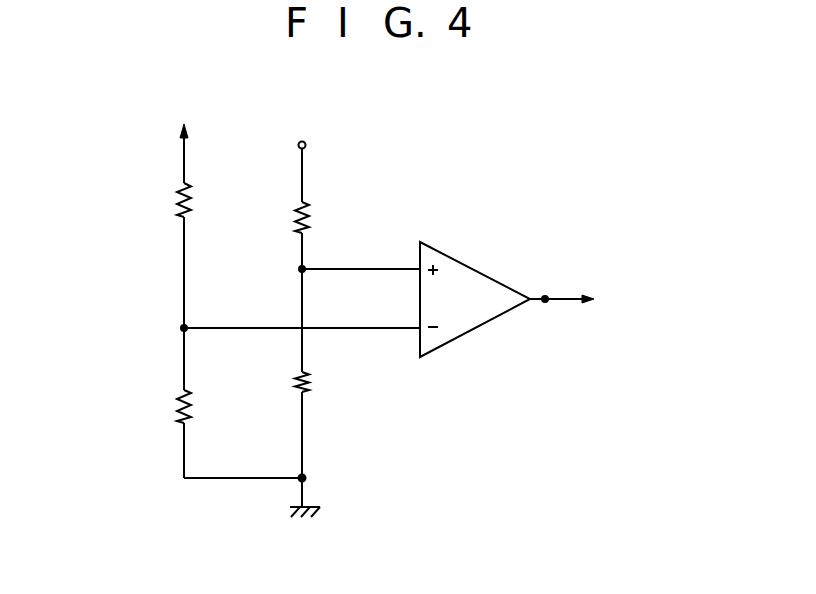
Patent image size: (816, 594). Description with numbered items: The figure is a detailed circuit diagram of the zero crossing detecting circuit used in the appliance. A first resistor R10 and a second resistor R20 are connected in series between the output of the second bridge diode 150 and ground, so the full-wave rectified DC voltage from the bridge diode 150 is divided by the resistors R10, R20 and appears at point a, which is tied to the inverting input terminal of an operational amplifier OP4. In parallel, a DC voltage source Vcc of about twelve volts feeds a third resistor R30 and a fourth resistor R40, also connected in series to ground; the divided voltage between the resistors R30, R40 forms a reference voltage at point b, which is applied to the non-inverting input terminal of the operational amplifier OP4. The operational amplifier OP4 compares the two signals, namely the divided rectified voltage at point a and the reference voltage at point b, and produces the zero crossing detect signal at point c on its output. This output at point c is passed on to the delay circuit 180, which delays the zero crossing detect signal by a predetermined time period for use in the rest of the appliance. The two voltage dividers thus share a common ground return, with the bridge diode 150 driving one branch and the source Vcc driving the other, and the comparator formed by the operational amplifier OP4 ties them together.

The second bridge diode 150 is at (181, 136).
The delay circuit 180 is at (594, 301).
The first resistor R10 is at (147, 200).
The second resistor R20 is at (154, 408).
The third resistor R30 is at (327, 213).
The fourth resistor R40 is at (325, 389).
The operational amplifier OP4 is at (475, 299).
The DC voltage source Vcc is at (332, 159).
The point a is at (184, 328).
The point b is at (303, 268).
The point c is at (545, 297).